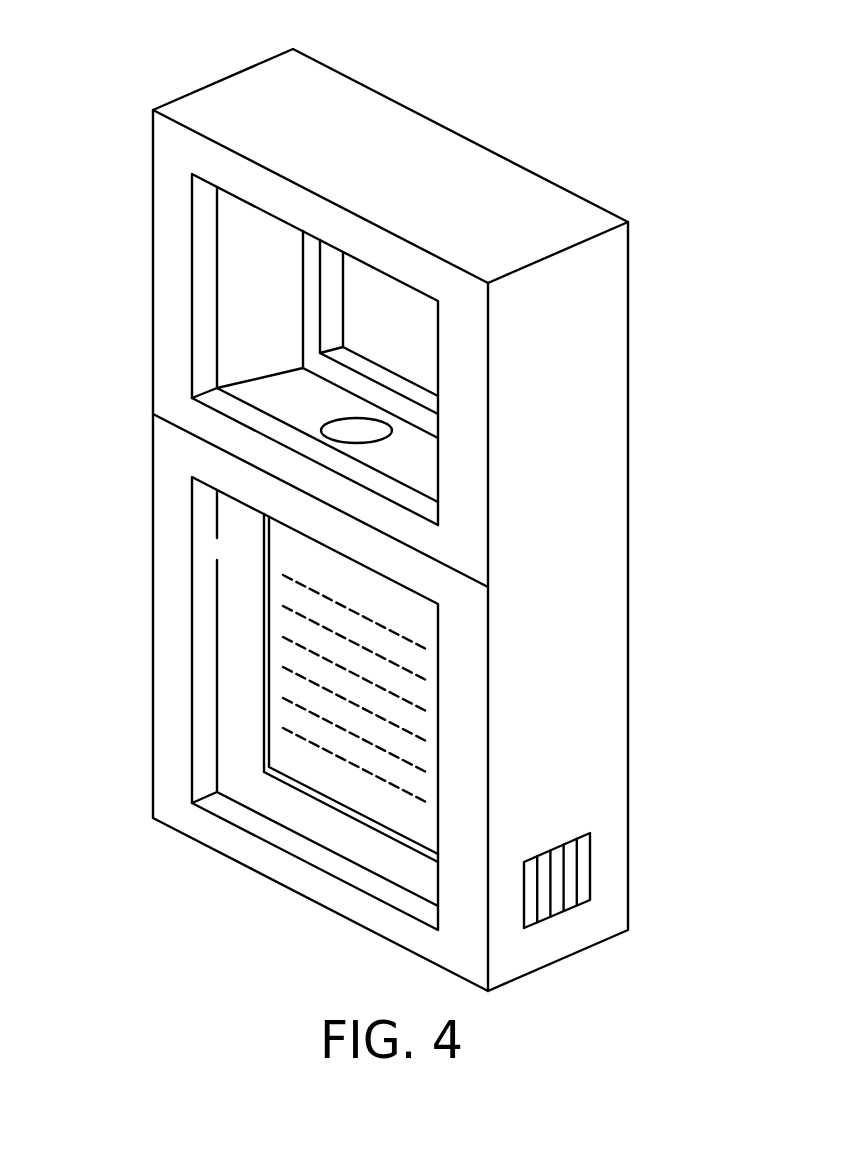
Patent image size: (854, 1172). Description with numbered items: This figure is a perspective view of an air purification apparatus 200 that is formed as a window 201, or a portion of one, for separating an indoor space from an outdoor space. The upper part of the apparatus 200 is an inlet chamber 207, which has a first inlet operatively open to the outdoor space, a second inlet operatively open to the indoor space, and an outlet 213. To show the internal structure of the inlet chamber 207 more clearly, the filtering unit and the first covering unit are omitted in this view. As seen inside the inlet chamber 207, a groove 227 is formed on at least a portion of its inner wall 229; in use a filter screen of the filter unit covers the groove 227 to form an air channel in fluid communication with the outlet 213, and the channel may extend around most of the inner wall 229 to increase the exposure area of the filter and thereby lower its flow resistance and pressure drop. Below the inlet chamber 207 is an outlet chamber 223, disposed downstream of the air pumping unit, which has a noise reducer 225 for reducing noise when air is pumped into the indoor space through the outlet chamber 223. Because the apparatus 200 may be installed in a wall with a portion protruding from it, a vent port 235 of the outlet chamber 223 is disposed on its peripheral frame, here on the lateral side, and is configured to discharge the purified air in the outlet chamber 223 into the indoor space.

The air purification apparatus 200 is at (510, 87).
The window 201 is at (542, 213).
The inlet chamber 207 is at (267, 265).
The outlet 213 is at (336, 411).
The groove 227 is at (283, 400).
The inner wall 229 is at (302, 422).
The outlet chamber 223 is at (248, 687).
The noise reducer 225 is at (283, 637).
The vent port 235 is at (577, 872).